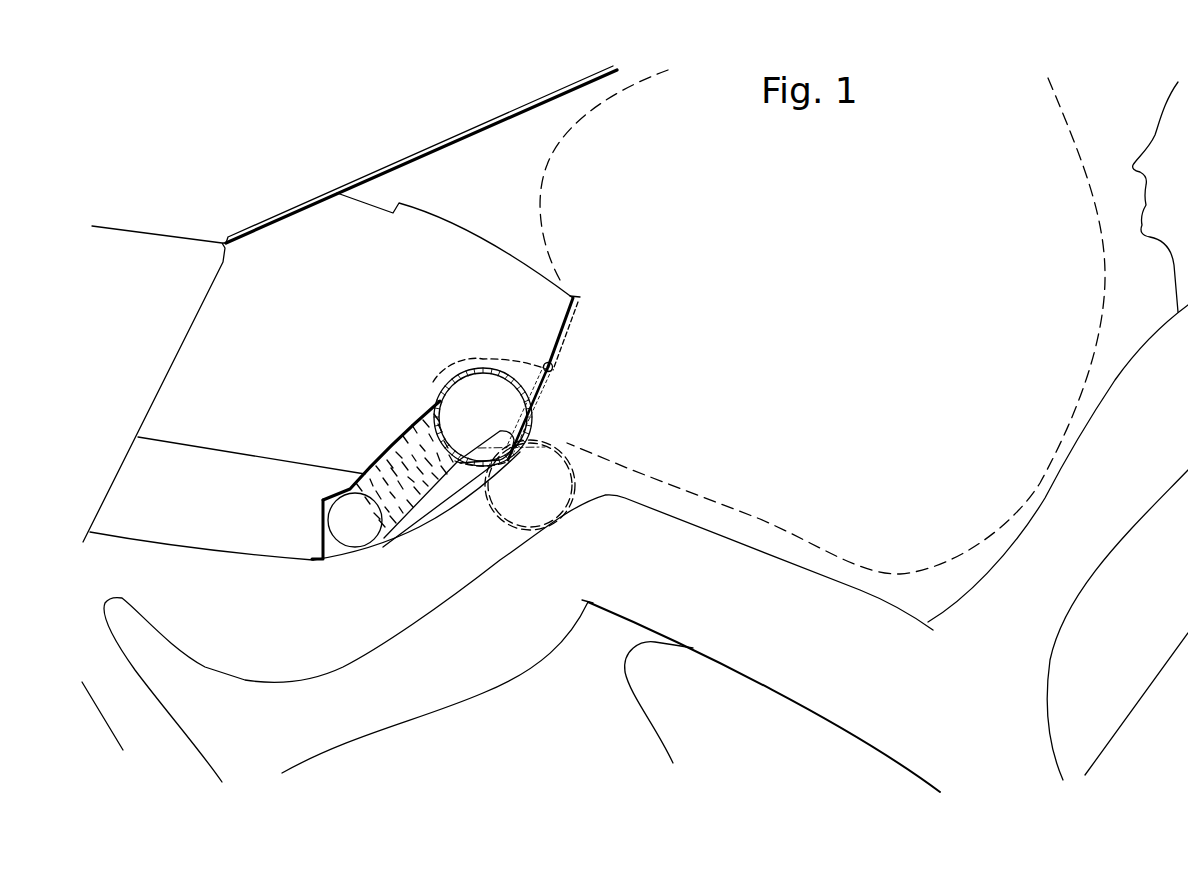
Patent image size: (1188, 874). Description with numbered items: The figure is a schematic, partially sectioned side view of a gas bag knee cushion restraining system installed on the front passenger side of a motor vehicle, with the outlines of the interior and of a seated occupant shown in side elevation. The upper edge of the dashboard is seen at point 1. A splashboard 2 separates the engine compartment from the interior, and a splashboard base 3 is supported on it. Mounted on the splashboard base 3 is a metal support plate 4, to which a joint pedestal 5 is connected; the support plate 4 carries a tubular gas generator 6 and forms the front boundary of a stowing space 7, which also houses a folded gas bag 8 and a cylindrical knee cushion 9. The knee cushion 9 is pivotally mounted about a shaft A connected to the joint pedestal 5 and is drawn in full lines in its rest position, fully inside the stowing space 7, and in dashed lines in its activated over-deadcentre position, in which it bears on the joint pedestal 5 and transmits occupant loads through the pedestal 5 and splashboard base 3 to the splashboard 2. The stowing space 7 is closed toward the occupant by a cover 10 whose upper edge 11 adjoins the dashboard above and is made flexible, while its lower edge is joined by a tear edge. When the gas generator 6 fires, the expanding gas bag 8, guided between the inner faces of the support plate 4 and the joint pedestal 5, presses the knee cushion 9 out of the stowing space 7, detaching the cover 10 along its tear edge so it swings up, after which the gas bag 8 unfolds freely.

The upper edge of the dashboard 1 is at (582, 298).
The splashboard 2 is at (185, 338).
The splashboard base 3 is at (178, 443).
The metal support plate 4 is at (320, 513).
The joint pedestal 5 is at (458, 477).
The tubular gas generator 6 is at (356, 541).
The stowing space 7 is at (425, 417).
The gas bag 8 is at (393, 463).
The knee cushion 9 is at (484, 370).
The cover 10 is at (548, 405).
The upper edge of the cover 11 is at (556, 372).
The shaft A is at (549, 449).